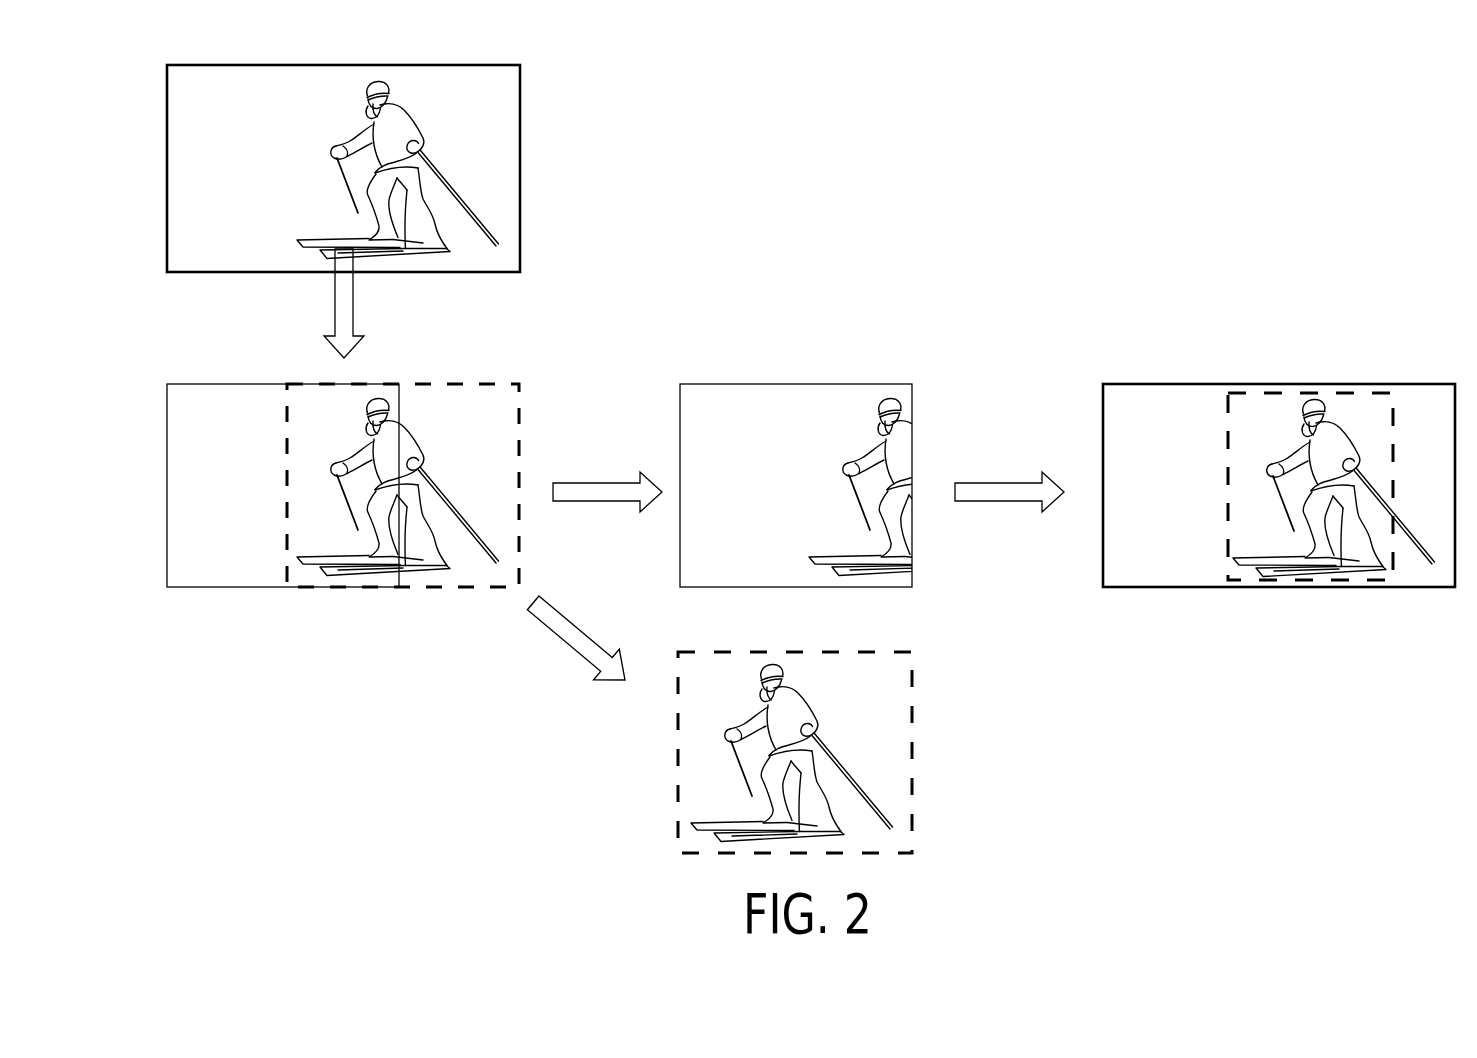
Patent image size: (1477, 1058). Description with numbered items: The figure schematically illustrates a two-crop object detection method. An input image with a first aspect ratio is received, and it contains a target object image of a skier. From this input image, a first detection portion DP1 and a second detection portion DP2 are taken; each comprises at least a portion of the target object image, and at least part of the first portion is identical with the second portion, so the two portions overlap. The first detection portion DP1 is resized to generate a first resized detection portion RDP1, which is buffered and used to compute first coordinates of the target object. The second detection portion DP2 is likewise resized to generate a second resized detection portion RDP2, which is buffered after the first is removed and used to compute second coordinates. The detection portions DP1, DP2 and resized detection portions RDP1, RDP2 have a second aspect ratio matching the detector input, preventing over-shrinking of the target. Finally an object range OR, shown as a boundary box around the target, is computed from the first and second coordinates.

The first detection portion DP1 is at (203, 384).
The second detection portion DP2 is at (475, 384).
The first resized detection portion RDP1 is at (852, 384).
The second resized detection portion RDP2 is at (868, 650).
The object range OR is at (1345, 393).